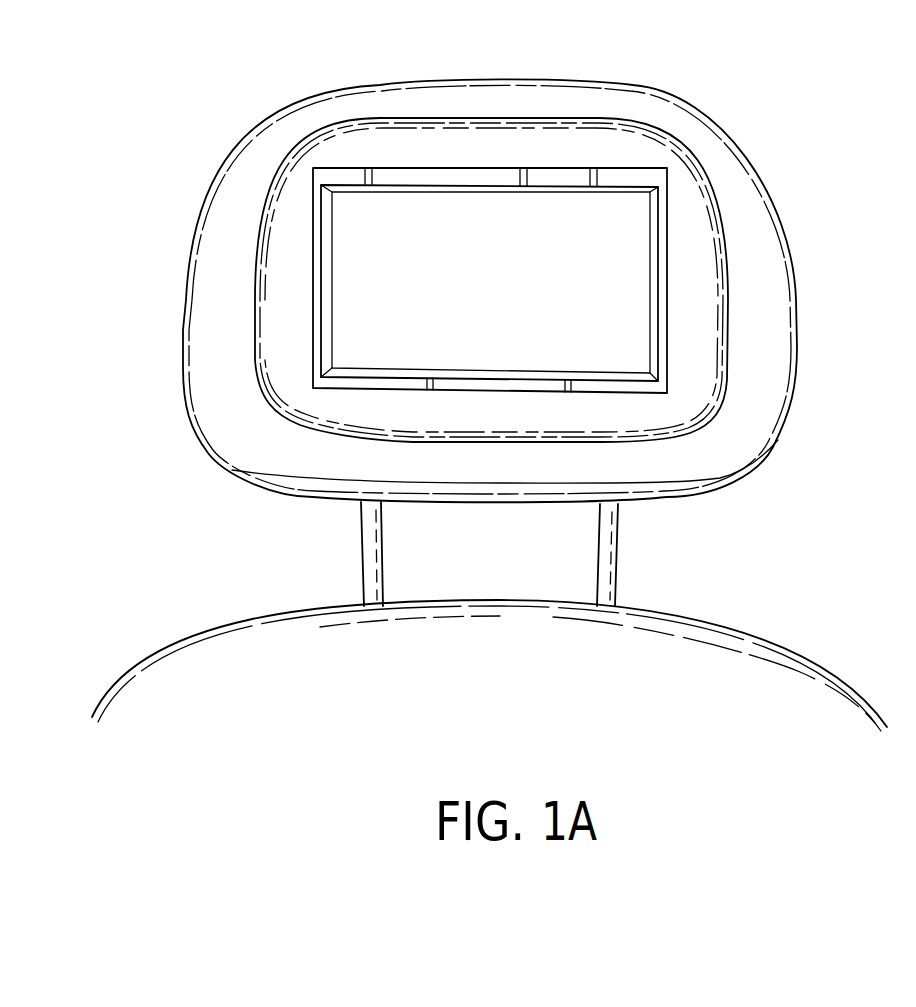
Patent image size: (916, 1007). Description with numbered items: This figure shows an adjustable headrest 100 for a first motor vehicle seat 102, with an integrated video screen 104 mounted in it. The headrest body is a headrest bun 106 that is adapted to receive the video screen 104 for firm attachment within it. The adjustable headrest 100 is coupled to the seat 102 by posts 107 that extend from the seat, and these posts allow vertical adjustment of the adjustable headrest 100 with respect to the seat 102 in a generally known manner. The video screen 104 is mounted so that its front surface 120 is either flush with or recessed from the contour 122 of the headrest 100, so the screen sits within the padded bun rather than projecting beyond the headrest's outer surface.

The adjustable headrest 100 is at (178, 101).
The first motor vehicle seat 102 is at (802, 687).
The integrated video screen 104 is at (560, 207).
The headrest bun 106 is at (755, 393).
The support posts 107 is at (382, 548).
The front surface of the video screen 120 is at (660, 212).
The contour of the headrest 122 is at (686, 237).